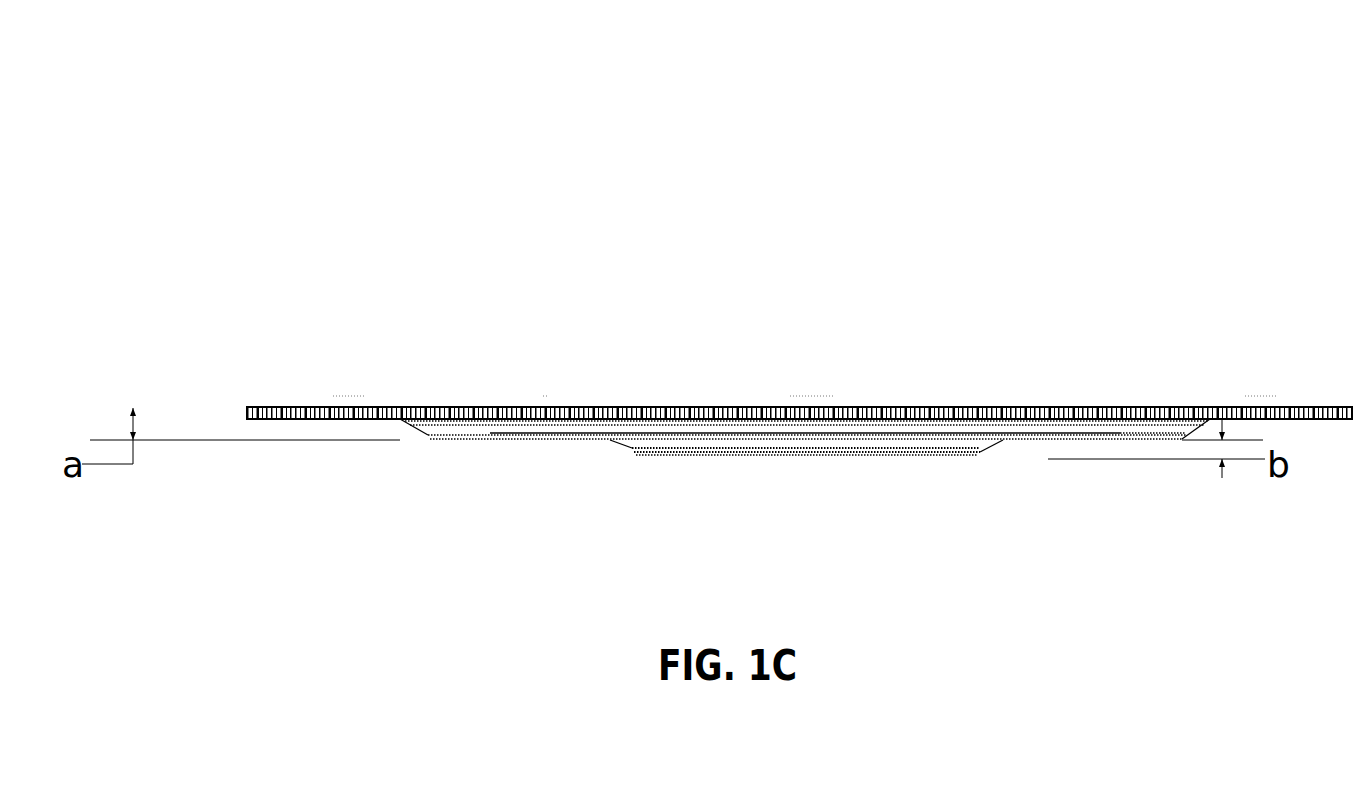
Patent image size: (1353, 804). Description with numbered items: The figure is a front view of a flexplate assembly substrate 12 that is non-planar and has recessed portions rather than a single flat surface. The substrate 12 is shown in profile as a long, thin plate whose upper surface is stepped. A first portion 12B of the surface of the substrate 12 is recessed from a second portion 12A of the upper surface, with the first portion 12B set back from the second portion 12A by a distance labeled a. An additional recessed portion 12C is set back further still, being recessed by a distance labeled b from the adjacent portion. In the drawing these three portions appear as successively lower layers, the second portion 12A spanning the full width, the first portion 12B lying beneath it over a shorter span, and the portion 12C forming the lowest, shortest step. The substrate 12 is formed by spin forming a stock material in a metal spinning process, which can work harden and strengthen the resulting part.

The substrate 12 is at (790, 105).
The second portion of the upper surface 12A is at (277, 407).
The first portion of the first surface 12B is at (502, 440).
The additional recessed portion 12C is at (677, 453).